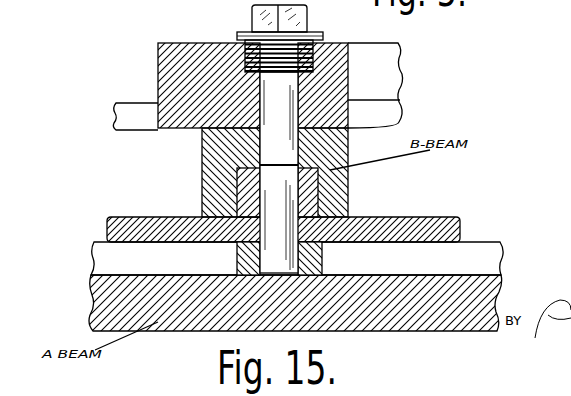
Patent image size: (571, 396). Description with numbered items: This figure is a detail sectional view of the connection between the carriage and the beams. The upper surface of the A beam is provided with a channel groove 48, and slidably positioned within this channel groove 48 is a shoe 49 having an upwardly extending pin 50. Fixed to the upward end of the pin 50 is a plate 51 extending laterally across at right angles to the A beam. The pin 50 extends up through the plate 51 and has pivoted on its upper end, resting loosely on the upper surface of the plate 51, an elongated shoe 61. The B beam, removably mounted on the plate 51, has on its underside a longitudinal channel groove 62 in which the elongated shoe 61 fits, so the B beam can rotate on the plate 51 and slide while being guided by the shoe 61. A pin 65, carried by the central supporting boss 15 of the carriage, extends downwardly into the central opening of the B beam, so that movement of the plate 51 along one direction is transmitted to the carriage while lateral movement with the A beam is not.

The pin 65 is at (267, 93).
The central supporting boss 15 is at (347, 43).
The channel groove 62 is at (220, 173).
The elongated shoe 61 is at (348, 180).
The plate 51 is at (195, 226).
The shoe 49 is at (233, 260).
The pin 50 is at (283, 245).
The channel groove 48 is at (460, 257).